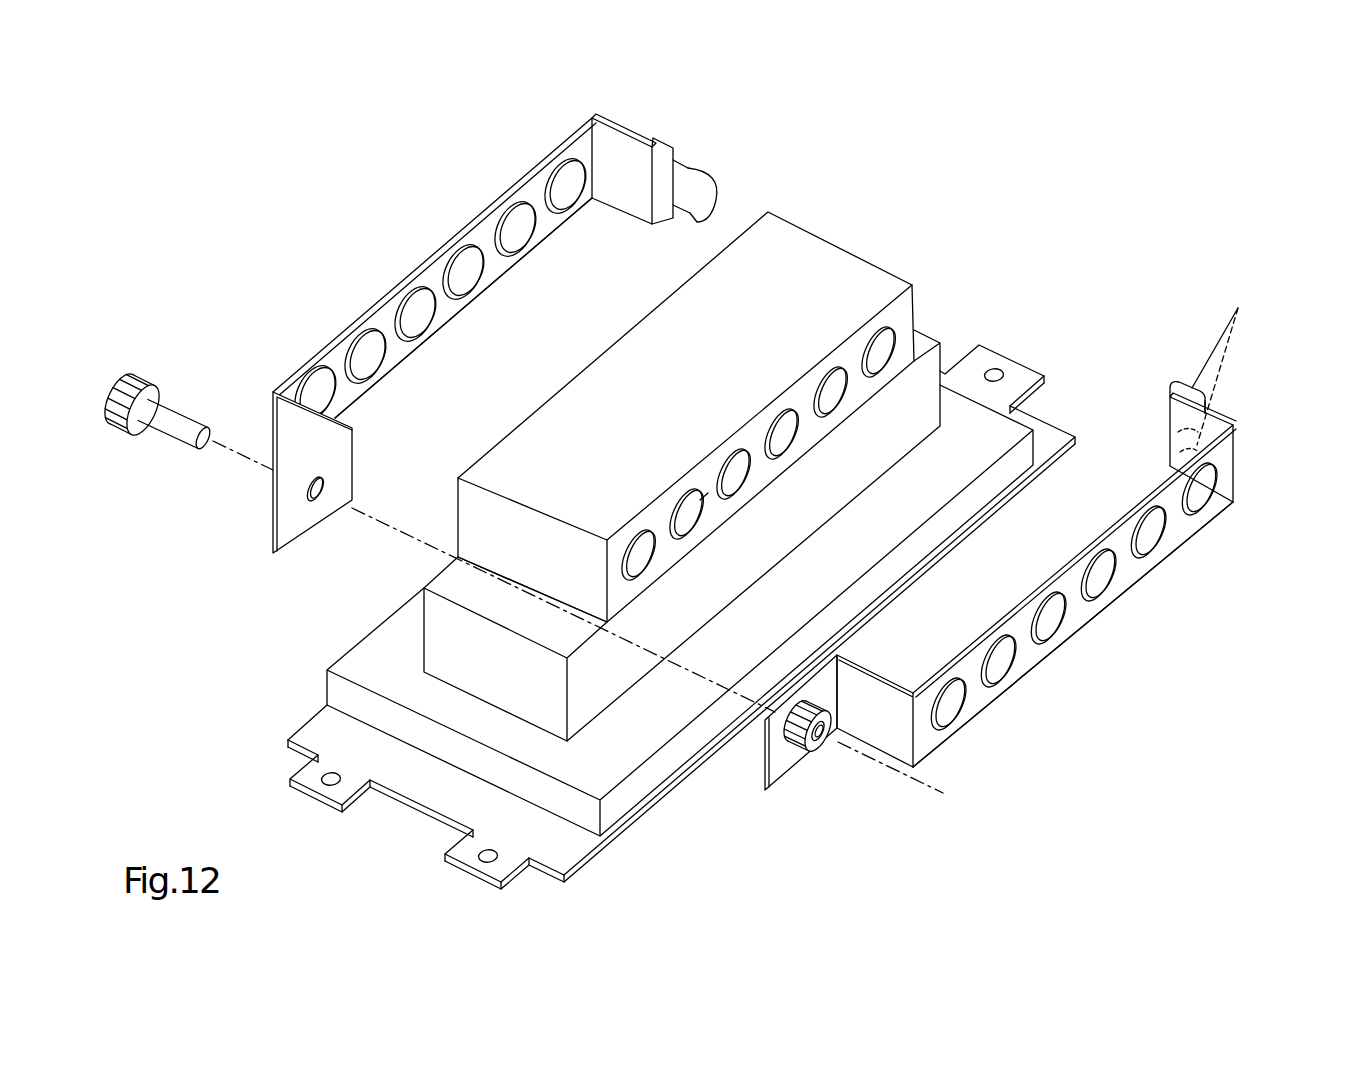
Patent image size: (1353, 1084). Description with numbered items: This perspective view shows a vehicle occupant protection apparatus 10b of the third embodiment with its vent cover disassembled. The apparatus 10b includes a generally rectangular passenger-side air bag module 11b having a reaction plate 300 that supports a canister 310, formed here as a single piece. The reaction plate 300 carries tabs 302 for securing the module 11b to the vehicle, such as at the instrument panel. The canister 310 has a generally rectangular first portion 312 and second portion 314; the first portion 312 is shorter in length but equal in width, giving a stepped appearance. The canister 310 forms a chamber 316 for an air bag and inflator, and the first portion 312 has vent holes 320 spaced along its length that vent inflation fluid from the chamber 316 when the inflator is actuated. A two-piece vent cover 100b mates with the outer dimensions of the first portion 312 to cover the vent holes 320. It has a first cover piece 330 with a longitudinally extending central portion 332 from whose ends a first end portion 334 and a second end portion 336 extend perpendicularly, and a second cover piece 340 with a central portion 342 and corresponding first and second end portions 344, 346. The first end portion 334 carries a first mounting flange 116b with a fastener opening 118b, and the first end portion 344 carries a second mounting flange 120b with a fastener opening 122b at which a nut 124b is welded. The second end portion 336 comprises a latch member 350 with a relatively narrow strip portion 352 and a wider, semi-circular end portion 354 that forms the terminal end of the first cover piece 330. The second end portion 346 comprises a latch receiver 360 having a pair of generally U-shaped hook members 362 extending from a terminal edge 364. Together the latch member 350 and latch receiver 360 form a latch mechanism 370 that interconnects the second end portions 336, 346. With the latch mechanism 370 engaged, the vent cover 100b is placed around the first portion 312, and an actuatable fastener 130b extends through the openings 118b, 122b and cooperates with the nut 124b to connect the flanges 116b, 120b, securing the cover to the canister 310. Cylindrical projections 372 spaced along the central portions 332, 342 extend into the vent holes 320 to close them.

The vehicle occupant protection apparatus 10b is at (880, 180).
The air bag module 11b is at (940, 198).
The vent cover 100b is at (481, 224).
The first mounting flange 116b is at (293, 527).
The fastener opening 118b is at (330, 488).
The second mounting flange 120b is at (778, 767).
The fastener opening 122b is at (825, 745).
The nut 124b is at (830, 745).
The actuatable fastener 130b is at (123, 402).
The reaction plate 300 is at (610, 760).
The tabs 302 is at (335, 803).
The canister 310 is at (670, 338).
The first portion 312 is at (607, 385).
The second portion 314 is at (463, 590).
The chamber 316 is at (700, 495).
The vent holes 320 is at (737, 475).
The first cover piece 330 is at (433, 280).
The central portion 332 is at (383, 317).
The first end portion 334 is at (290, 422).
The second end portion 336 is at (615, 152).
The second cover piece 340 is at (1027, 647).
The central portion 342 is at (1130, 567).
The first end portion 344 is at (878, 707).
The second end portion 346 is at (1225, 418).
The latch member 350 is at (700, 168).
The strip portion 352 is at (684, 195).
The end portion 354 is at (712, 194).
The latch receiver 360 is at (1170, 345).
The hook members 362 is at (1228, 360).
The terminal edge 364 is at (1167, 425).
The latch mechanism 370 is at (662, 100).
The cylindrical projections 372 is at (370, 360).